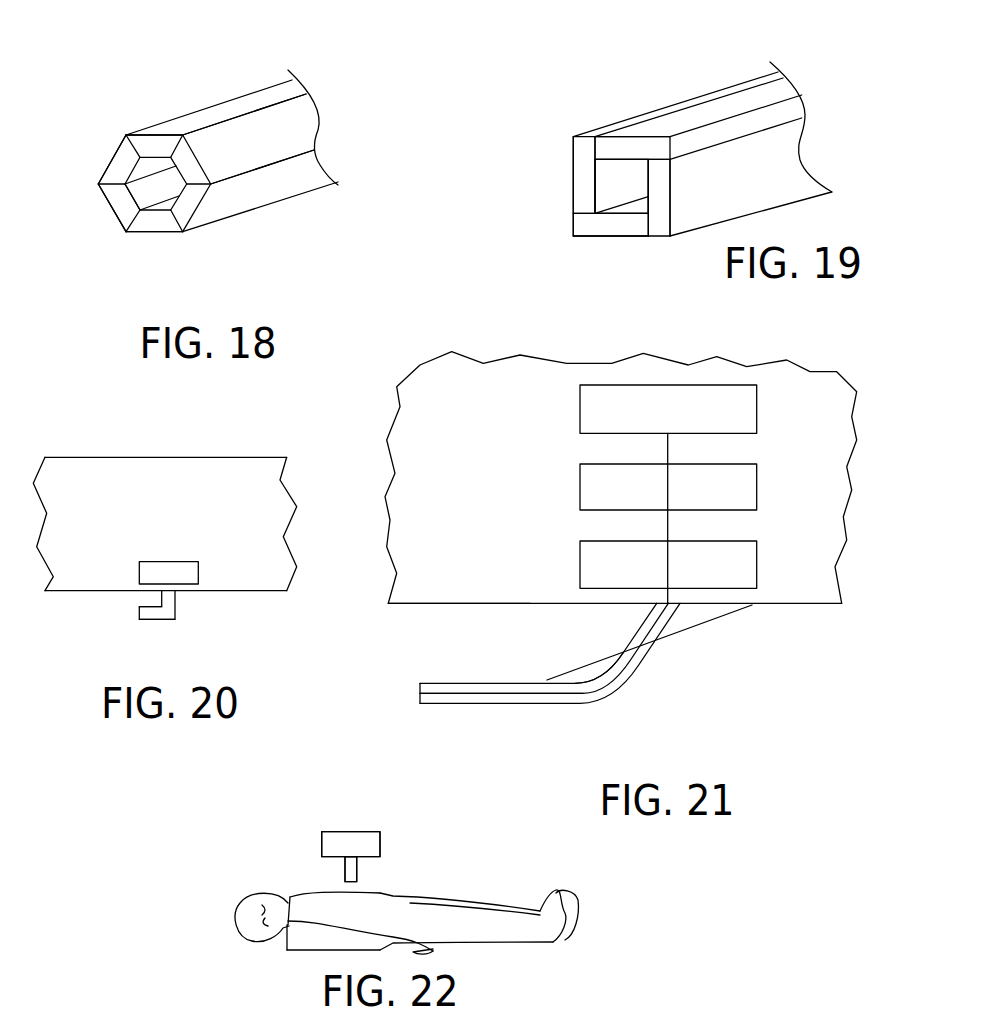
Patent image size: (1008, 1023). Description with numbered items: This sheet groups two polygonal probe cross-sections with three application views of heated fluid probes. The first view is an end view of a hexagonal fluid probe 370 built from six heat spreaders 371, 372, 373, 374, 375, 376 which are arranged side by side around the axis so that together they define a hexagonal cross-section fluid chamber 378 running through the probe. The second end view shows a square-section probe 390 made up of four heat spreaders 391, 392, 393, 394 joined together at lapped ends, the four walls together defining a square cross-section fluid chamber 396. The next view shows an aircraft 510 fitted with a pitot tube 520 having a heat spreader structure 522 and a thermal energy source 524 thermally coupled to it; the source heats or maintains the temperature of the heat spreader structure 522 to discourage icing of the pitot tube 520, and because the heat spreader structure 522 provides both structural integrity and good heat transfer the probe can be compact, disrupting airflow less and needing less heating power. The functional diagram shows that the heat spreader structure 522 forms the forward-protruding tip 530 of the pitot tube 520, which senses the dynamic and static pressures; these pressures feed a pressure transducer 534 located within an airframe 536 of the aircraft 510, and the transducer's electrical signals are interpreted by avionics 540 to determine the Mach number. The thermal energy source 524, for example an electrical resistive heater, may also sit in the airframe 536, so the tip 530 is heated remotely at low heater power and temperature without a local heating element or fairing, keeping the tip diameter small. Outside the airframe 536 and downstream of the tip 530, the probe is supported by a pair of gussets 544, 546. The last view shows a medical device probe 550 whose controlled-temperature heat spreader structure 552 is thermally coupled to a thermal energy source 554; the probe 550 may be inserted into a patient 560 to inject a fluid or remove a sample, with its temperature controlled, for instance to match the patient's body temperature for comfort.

In FIG. 18, the hexagonal fluid probe 370 is at (216, 84).
In FIG. 18, the heat spreader 371 is at (126, 161).
In FIG. 18, the heat spreader 372 is at (155, 145).
In FIG. 18, the heat spreader 373 is at (260, 137).
In FIG. 18, the heat spreader 374 is at (268, 183).
In FIG. 18, the heat spreader 375 is at (150, 220).
In FIG. 18, the heat spreader 376 is at (120, 200).
In FIG. 18, the fluid chamber 378 is at (157, 190).
In FIG. 19, the probe 390 is at (648, 86).
In FIG. 19, the heat spreader 391 is at (582, 151).
In FIG. 19, the heat spreader 392 is at (697, 117).
In FIG. 19, the heat spreader 393 is at (753, 167).
In FIG. 19, the heat spreader 394 is at (593, 222).
In FIG. 19, the fluid chamber 396 is at (622, 182).
In FIG. 20, the aircraft 510 is at (105, 485).
In FIG. 21, the aircraft 510 is at (460, 476).
In FIG. 20, the pitot tube 520 is at (110, 612).
In FIG. 21, the pitot tube 520 is at (492, 726).
In FIG. 20, the heat spreader structure 522 is at (153, 620).
In FIG. 20, the thermal energy source 524 is at (168, 572).
In FIG. 21, the thermal energy source 524 is at (758, 562).
In FIG. 21, the forward-protruding tip 530 is at (400, 704).
In FIG. 21, the pressure transducer 534 is at (758, 487).
In FIG. 21, the airframe 536 is at (462, 603).
In FIG. 21, the avionics 540 is at (758, 410).
In FIG. 21, the gusset 544 is at (595, 670).
In FIG. 21, the gusset 546 is at (690, 612).
In FIG. 22, the medical device probe 550 is at (316, 813).
In FIG. 22, the heat spreader structure 552 is at (357, 868).
In FIG. 22, the thermal energy source 554 is at (380, 845).
In FIG. 22, the patient 560 is at (312, 888).